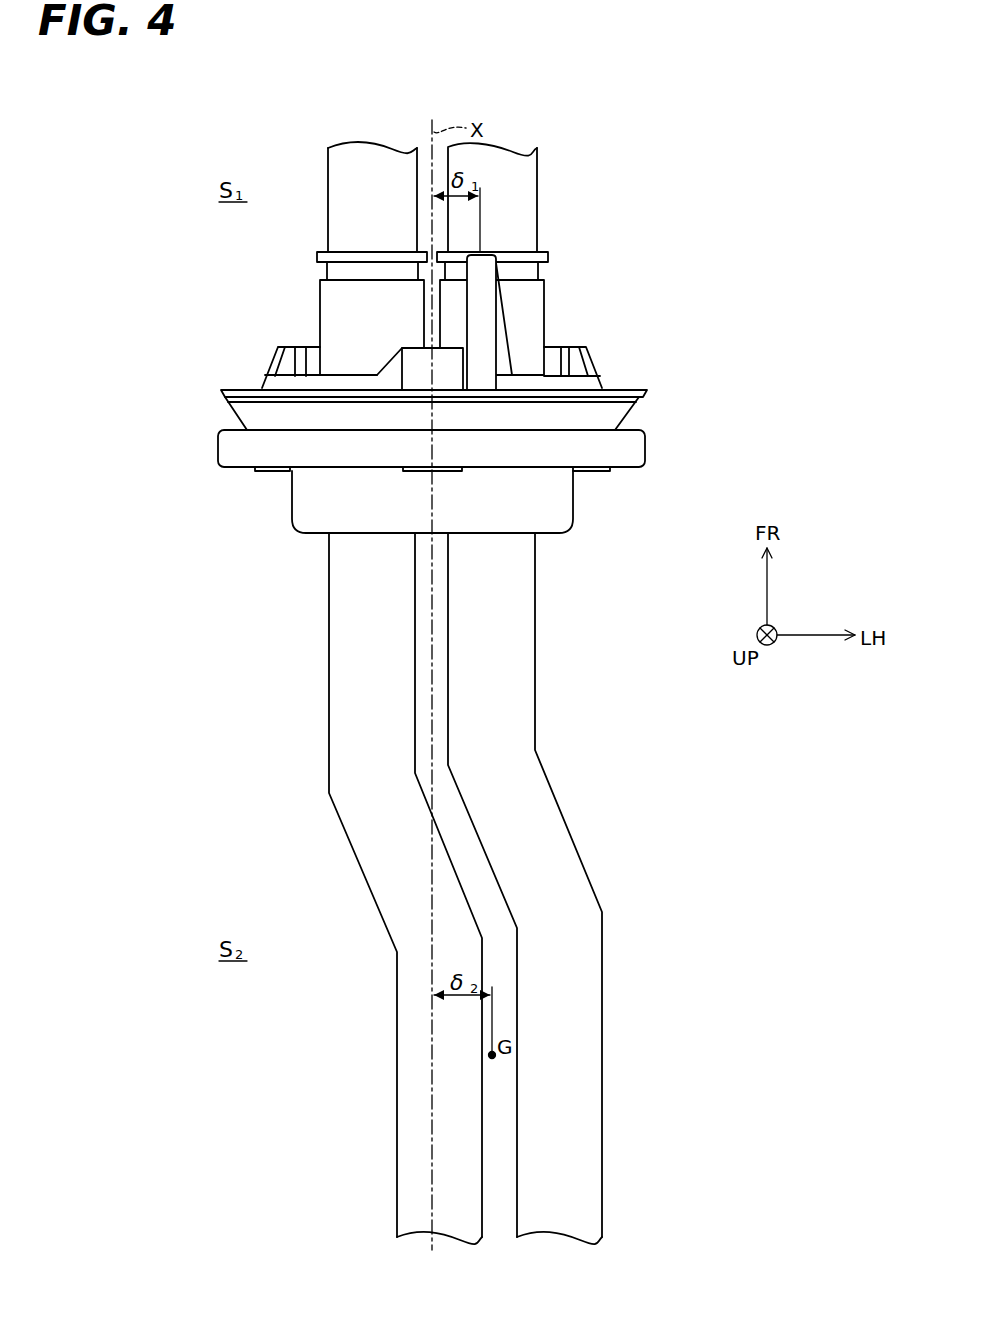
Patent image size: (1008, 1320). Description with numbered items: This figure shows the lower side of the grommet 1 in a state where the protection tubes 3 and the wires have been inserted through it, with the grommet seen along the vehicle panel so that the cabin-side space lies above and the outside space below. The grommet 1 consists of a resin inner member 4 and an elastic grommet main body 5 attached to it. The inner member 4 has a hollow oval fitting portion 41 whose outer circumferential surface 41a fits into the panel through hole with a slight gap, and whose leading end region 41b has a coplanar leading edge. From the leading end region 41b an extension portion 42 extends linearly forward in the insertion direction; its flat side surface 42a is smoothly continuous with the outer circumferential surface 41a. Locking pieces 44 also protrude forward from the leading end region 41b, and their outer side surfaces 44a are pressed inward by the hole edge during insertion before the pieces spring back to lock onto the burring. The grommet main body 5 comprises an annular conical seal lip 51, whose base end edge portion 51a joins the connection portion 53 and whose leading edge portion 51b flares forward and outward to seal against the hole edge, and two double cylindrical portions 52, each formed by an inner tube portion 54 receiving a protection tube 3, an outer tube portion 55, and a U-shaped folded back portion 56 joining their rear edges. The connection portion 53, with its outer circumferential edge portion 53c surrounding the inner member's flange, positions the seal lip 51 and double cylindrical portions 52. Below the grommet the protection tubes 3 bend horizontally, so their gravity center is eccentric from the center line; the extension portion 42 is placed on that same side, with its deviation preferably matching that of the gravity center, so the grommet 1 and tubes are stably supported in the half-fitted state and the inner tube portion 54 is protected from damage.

The grommet 1 is at (692, 257).
The protection tube 3 is at (328, 692).
The inner member 4 is at (207, 315).
The grommet main body 5 is at (270, 485).
The fitting portion 41 is at (343, 375).
The outer circumferential surface 41a is at (261, 386).
The leading end region 41b is at (307, 375).
The extension portion 42 is at (497, 263).
The side surface 42a is at (485, 330).
The locking piece 44 is at (285, 347).
The side surface 44a is at (402, 367).
The seal lip 51 is at (463, 397).
The base end edge portion 51a is at (617, 428).
The leading edge portion 51b is at (645, 392).
The double cylindrical portion 52 is at (461, 540).
The connection portion 53 is at (464, 470).
The outer circumferential edge portion 53c is at (647, 443).
The inner tube portion 54 is at (544, 286).
The outer tube portion 55 is at (575, 503).
The folded back portion 56 is at (555, 534).